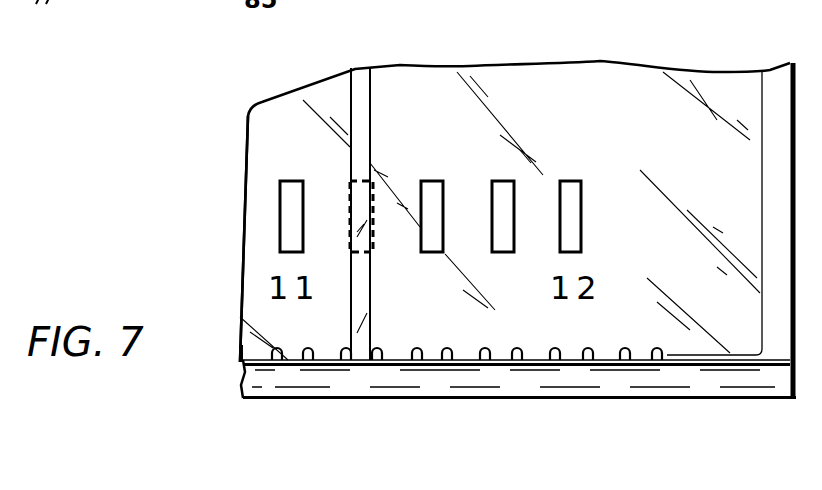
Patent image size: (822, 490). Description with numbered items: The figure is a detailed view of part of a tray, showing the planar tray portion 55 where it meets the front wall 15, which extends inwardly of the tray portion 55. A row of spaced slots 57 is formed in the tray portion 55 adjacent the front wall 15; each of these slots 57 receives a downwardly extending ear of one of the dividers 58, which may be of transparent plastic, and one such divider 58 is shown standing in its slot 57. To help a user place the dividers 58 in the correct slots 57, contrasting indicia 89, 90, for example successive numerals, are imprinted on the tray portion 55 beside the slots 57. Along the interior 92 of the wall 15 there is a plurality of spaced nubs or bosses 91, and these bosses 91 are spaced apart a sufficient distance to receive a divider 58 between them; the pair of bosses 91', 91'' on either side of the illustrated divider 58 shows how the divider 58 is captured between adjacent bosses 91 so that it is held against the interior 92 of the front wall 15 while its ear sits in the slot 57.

The tray portion 55 is at (594, 124).
The slots 57 is at (570, 212).
The dividers 58 is at (365, 121).
The contrasting indicia 89 is at (257, 287).
The contrasting indicia 90 is at (602, 284).
The nubs or bosses 91 is at (678, 328).
The boss 91' is at (315, 403).
The boss 91'' is at (413, 403).
The interior of wall 92 is at (432, 360).
The front wall 15 is at (610, 377).